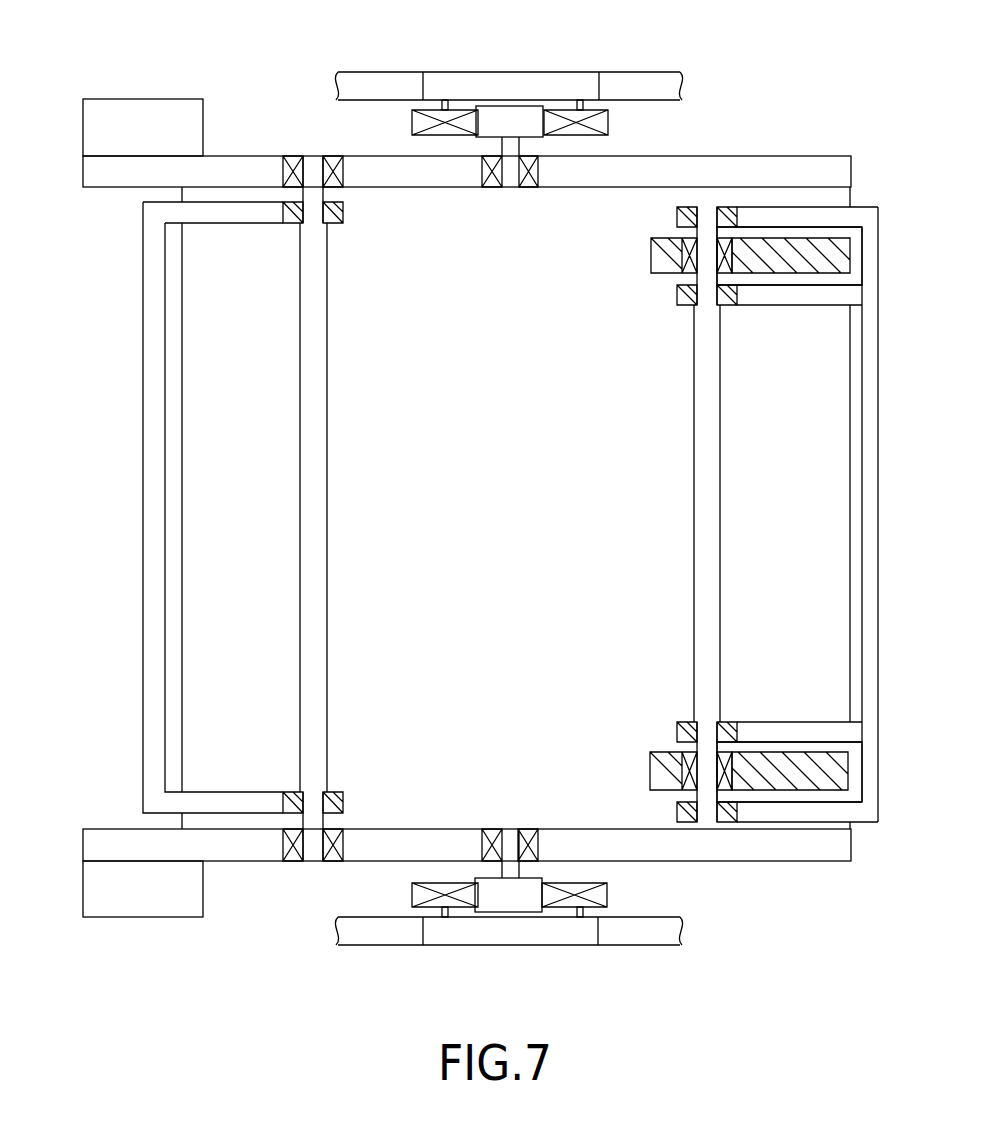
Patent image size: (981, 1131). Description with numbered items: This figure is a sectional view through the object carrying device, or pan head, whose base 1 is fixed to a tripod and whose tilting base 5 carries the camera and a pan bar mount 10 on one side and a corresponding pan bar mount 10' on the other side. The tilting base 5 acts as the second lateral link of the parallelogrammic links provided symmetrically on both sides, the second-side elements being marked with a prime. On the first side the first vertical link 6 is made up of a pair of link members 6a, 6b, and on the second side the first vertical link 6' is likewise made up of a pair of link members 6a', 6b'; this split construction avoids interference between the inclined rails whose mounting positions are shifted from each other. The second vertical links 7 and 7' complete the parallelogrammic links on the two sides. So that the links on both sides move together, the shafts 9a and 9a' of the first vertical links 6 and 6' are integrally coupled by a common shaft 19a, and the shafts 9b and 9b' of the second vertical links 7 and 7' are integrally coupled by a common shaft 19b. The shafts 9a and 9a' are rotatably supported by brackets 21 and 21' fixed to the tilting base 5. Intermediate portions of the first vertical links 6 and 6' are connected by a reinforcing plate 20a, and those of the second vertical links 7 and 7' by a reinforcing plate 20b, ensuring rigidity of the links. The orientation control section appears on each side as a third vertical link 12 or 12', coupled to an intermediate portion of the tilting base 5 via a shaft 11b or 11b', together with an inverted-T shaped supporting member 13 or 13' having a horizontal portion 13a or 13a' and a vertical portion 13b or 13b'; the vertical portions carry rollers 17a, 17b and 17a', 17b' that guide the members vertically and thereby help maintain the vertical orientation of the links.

The base 1 is at (520, 533).
The tilting base 5 is at (830, 165).
The first vertical link 6 is at (702, 792).
The link member 6a is at (739, 853).
The link member 6b is at (745, 711).
The first vertical link 6' is at (708, 237).
The link member 6a' is at (753, 170).
The link member 6b' is at (740, 323).
The second vertical link 7 is at (308, 768).
The second vertical link 7' is at (309, 240).
The shaft 9a is at (691, 826).
The shaft 9b is at (313, 875).
The shaft 9a' is at (693, 198).
The shaft 9b' is at (313, 146).
The pan bar mount 10 is at (143, 916).
The pan bar mount 10' is at (143, 102).
The shaft 11b is at (510, 828).
The shaft 11b' is at (509, 189).
The third vertical link 12 is at (529, 842).
The third vertical link 12' is at (490, 79).
The supporting member 13 is at (560, 954).
The horizontal portion 13a is at (630, 957).
The vertical portion 13b is at (479, 959).
The supporting member 13' is at (562, 66).
The horizontal portion 13a' is at (629, 61).
The vertical portion 13b' is at (484, 61).
The roller 17a is at (613, 897).
The roller 17b is at (405, 893).
The roller 17a' is at (615, 124).
The roller 17b' is at (410, 124).
The common shaft 19a is at (710, 520).
The common shaft 19b is at (327, 527).
The reinforcing plate 20a is at (863, 815).
The reinforcing plate 20b is at (142, 560).
The bracket 21 is at (789, 741).
The bracket 21' is at (789, 292).